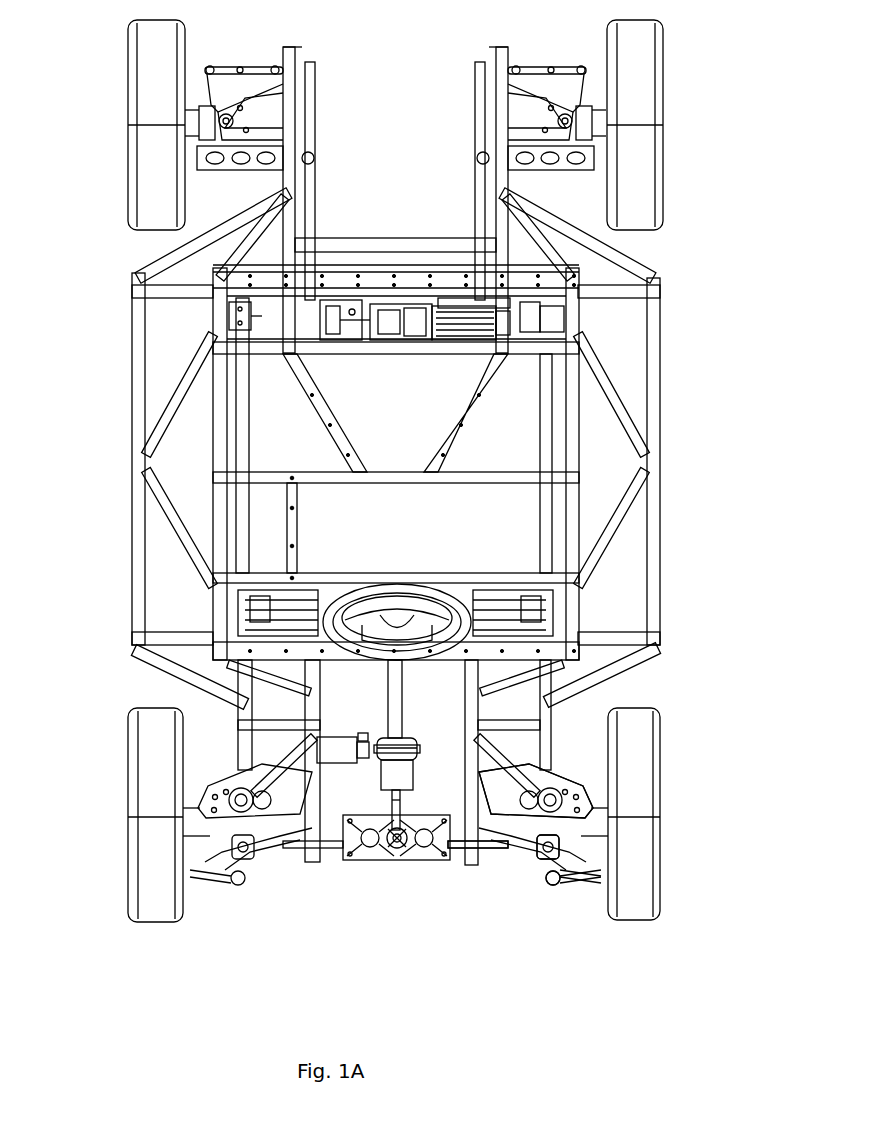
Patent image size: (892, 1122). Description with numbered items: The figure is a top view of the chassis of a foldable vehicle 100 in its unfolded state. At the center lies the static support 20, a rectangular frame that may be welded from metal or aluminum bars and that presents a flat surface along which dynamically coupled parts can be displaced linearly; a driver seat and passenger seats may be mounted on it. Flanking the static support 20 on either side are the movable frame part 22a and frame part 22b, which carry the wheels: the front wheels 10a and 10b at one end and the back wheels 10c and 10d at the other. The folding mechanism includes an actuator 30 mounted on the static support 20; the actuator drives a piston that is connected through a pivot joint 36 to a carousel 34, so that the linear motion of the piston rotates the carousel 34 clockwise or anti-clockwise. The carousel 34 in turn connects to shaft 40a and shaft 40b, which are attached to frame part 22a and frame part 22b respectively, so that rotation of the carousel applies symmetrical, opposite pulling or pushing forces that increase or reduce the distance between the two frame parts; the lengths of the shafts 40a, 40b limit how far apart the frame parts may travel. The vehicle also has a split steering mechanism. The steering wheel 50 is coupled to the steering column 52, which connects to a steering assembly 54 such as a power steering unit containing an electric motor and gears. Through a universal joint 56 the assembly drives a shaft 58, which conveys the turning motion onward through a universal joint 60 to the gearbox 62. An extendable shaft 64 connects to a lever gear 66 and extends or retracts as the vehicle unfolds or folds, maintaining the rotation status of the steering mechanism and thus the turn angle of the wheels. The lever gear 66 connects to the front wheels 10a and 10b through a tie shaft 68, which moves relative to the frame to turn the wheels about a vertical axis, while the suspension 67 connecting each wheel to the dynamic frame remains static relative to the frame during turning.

The foldable vehicle 100 is at (75, 888).
The front wheel 10a is at (645, 922).
The front wheel 10b is at (155, 852).
The back wheel 10c is at (663, 36).
The back wheel 10d is at (128, 34).
The static support 20 is at (401, 487).
The frame part 22a is at (551, 696).
The frame part 22b is at (130, 636).
The actuator 30 is at (524, 326).
The carousel 34 is at (404, 341).
The pivot joint 36 is at (432, 334).
The shaft 40a is at (465, 299).
The shaft 40b is at (322, 305).
The steering wheel 50 is at (470, 604).
The steering column 52 is at (403, 684).
The steering assembly 54 is at (347, 737).
The universal joint 56 is at (405, 797).
The shaft 58 is at (388, 812).
The universal joint 60 is at (376, 862).
The gearbox 62 is at (397, 862).
The extendable shaft 64 is at (493, 853).
The lever gear 66 is at (567, 848).
The suspension 67 is at (597, 787).
The tie shaft 68 is at (588, 878).